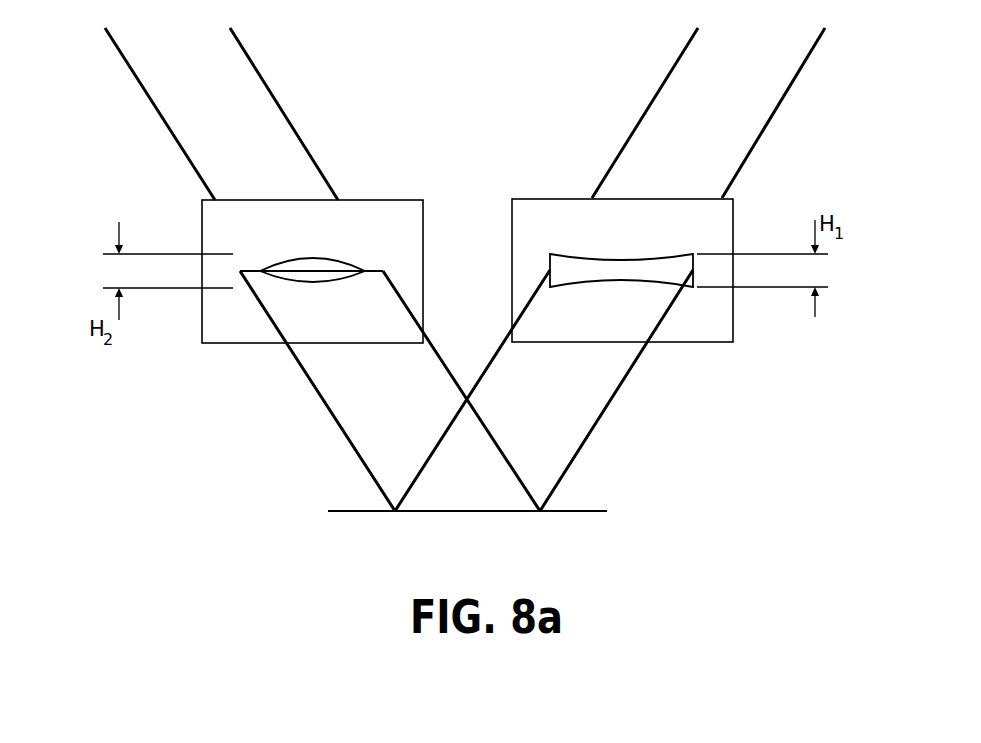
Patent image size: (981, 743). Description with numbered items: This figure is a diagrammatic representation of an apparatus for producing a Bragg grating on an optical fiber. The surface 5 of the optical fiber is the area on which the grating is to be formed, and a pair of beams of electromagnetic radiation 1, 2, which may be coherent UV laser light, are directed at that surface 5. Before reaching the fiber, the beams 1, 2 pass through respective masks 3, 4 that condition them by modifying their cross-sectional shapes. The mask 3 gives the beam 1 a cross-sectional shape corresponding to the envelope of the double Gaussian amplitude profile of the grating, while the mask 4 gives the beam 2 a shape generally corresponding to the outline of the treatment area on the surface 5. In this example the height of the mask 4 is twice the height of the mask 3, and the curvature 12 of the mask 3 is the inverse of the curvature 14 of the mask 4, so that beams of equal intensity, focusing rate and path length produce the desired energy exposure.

The beam of electromagnetic radiation 1 is at (128, 70).
The beam of electromagnetic radiation 2 is at (808, 68).
The mask 3 is at (197, 209).
The mask 4 is at (740, 216).
The surface of the optical fiber 5 is at (388, 504).
The curvature of the mask 12 is at (313, 257).
The curvature of the mask 14 is at (618, 259).